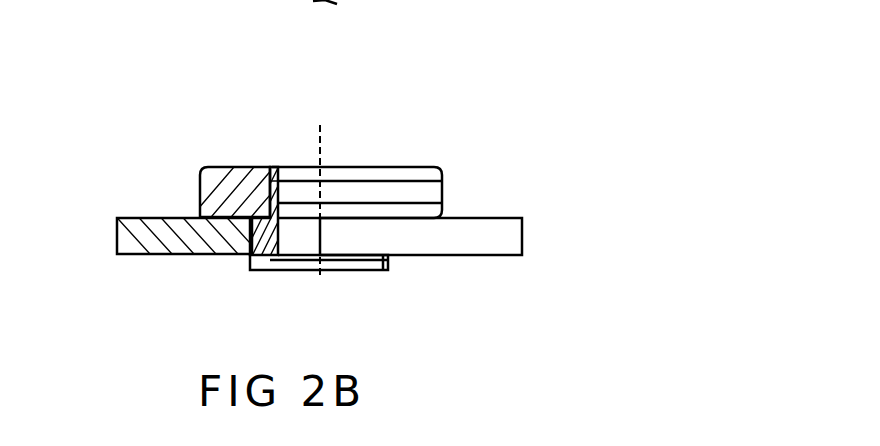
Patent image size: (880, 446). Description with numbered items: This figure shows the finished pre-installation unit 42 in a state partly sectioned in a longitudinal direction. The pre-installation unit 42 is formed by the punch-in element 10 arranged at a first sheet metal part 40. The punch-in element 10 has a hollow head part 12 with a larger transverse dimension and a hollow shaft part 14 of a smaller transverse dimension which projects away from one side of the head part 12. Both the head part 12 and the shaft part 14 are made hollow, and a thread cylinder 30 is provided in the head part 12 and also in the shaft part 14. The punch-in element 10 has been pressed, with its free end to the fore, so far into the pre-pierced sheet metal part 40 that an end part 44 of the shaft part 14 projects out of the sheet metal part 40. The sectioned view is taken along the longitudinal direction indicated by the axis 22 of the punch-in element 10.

The punch-in element 10 is at (455, 183).
The head part 12 is at (200, 180).
The shaft part 14 is at (263, 237).
The central axis 22 is at (322, 112).
The thread cylinder 30 is at (290, 196).
The first sheet metal part 40 is at (528, 242).
The pre-installation unit 42 is at (490, 88).
The end part 44 is at (253, 262).